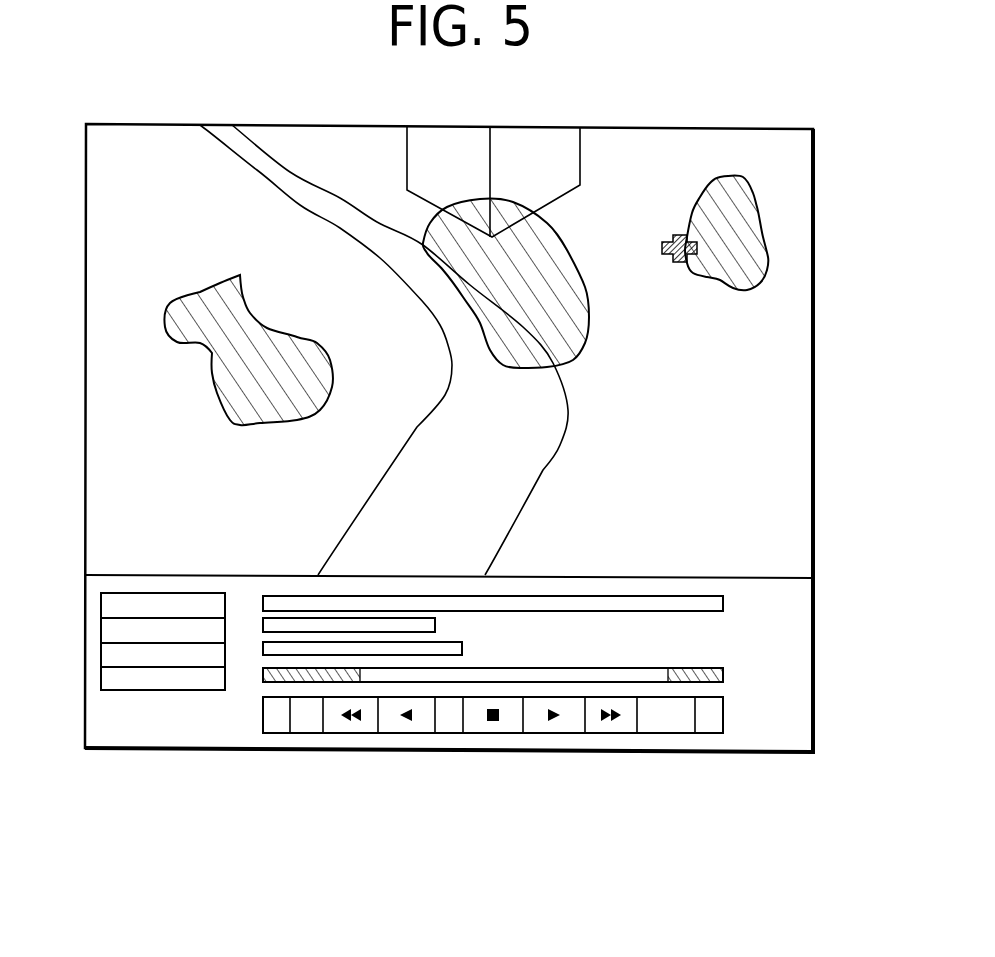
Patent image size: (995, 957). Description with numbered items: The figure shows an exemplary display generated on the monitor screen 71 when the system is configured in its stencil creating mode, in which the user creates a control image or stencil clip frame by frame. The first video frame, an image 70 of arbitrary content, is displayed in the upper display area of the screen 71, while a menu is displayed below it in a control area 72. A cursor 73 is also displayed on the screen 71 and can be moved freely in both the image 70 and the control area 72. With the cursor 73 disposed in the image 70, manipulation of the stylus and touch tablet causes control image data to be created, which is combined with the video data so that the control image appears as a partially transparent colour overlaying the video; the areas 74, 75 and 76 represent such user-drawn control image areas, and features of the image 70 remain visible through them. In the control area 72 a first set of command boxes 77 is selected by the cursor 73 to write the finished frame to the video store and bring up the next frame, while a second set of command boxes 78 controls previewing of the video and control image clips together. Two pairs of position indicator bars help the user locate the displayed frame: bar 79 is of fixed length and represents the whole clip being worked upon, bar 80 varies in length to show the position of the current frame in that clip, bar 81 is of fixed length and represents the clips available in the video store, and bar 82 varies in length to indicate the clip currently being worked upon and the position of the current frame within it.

The image 70 is at (783, 318).
The screen 71 is at (166, 769).
The control area 72 is at (785, 668).
The cursor 73 is at (676, 235).
The control image area 74 is at (213, 360).
The control image area 75 is at (578, 350).
The control image area 76 is at (748, 223).
The first set of command boxes 77 is at (102, 630).
The second set of command boxes 78 is at (688, 733).
The indicator bar 79 is at (277, 603).
The indicator bar 80 is at (262, 622).
The indicator bar 81 is at (377, 670).
The indicator bar 82 is at (464, 645).